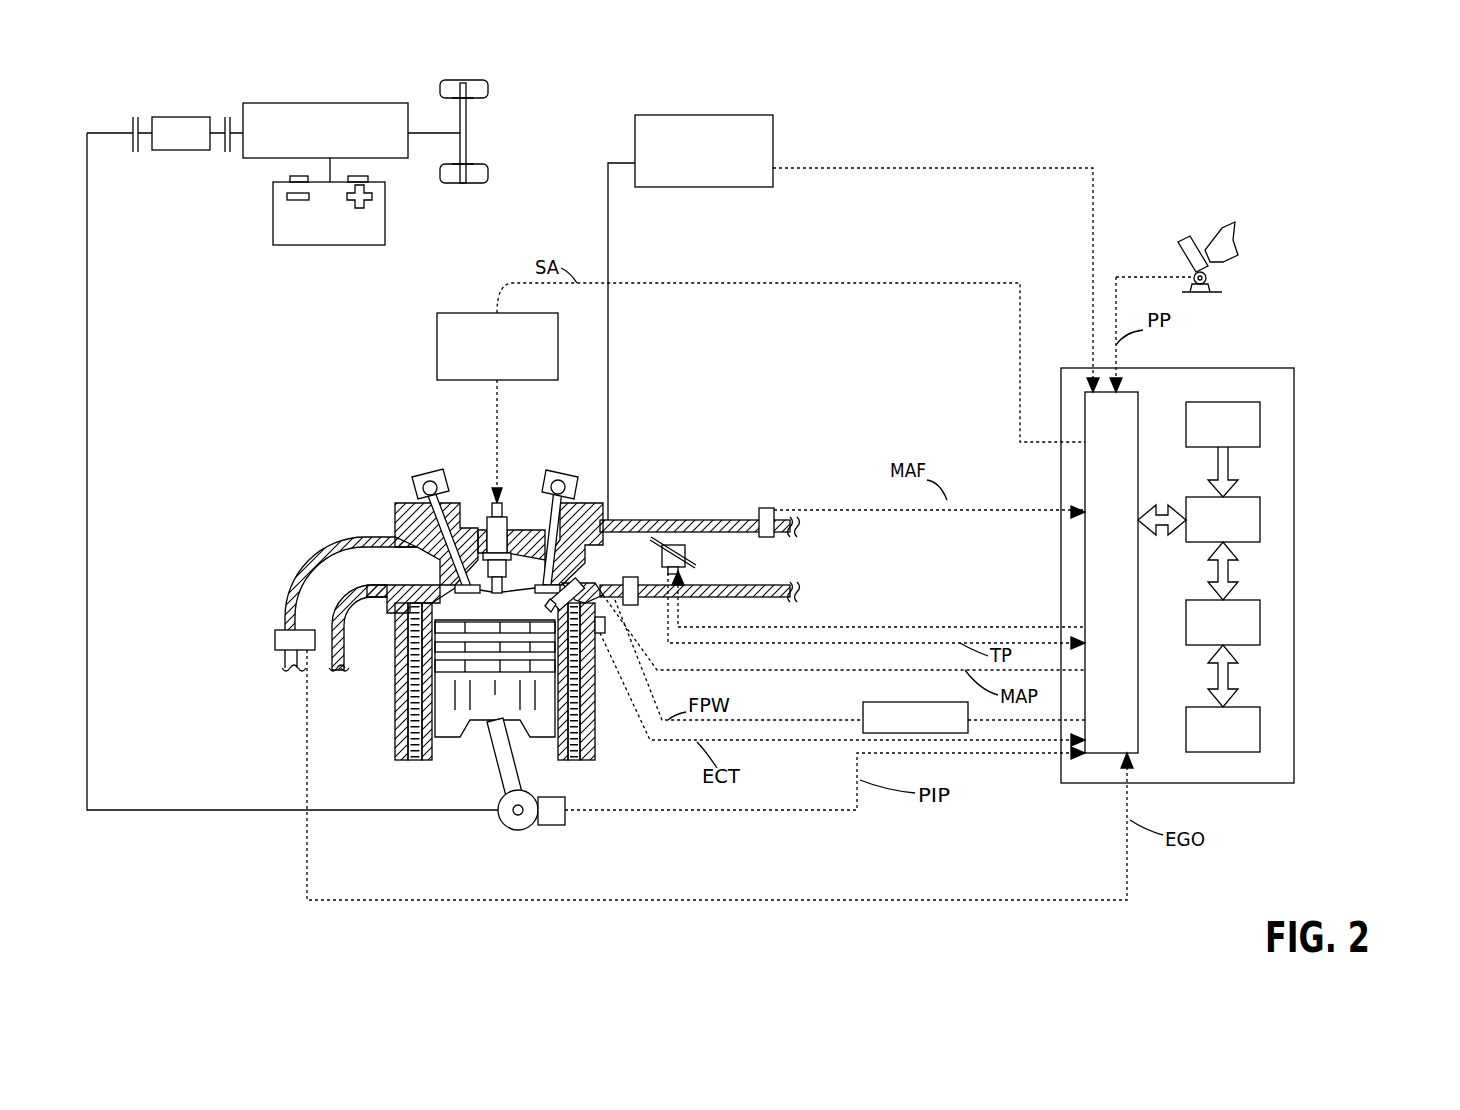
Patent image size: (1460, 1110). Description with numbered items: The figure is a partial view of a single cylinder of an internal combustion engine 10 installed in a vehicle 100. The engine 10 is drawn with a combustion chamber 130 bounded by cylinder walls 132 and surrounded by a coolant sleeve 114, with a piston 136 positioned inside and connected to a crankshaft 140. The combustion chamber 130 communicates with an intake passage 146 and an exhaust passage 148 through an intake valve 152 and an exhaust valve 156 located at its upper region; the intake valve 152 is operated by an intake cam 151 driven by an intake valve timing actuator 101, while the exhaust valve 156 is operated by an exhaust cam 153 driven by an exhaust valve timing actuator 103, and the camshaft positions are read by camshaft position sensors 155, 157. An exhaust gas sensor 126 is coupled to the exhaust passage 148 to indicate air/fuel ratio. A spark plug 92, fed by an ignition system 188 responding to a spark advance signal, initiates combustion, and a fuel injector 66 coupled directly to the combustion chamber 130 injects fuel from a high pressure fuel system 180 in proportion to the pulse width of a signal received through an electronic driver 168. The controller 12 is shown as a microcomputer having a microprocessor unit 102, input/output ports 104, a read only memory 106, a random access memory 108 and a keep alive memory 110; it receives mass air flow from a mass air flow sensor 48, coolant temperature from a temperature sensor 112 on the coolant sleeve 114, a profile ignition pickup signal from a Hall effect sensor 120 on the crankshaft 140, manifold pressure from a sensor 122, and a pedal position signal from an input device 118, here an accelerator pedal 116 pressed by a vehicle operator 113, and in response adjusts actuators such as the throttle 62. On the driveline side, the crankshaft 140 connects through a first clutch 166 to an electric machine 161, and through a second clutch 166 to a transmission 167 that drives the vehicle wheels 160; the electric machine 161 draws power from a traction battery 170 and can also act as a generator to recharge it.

The internal combustion engine 10 is at (322, 340).
The controller 12 is at (1290, 368).
The mass air flow sensor 48 is at (774, 510).
The throttle 62 is at (672, 545).
The fuel injector 66 is at (572, 590).
The spark plug 92 is at (490, 520).
The vehicle 100 is at (1382, 140).
The intake valve timing actuator 101 is at (563, 472).
The microprocessor unit 102 is at (1262, 515).
The exhaust valve timing actuator 103 is at (432, 477).
The input/output ports 104 is at (1140, 400).
The read only memory 106 is at (1262, 420).
The random access memory 108 is at (1262, 620).
The keep alive memory 110 is at (1262, 727).
The temperature sensor 112 is at (605, 635).
The vehicle operator 113 is at (1232, 240).
The coolant sleeve 114 is at (598, 660).
The accelerator pedal 116 is at (1180, 256).
The input device 118 is at (1212, 280).
The Hall effect sensor 120 is at (556, 826).
The manifold pressure sensor 122 is at (638, 598).
The exhaust gas sensor 126 is at (275, 640).
The combustion chamber 130 is at (455, 600).
The cylinder walls 132 is at (433, 748).
The piston 136 is at (485, 705).
The crankshaft 140 is at (506, 826).
The intake passage 146 is at (642, 567).
The exhaust passage 148 is at (352, 579).
The intake cam 151 is at (555, 475).
The intake valve 152 is at (538, 545).
The exhaust cam 153 is at (437, 475).
The camshaft position sensor 155 is at (575, 482).
The exhaust valve 156 is at (450, 578).
The camshaft position sensor 157 is at (412, 492).
The vehicle wheels 160 is at (470, 183).
The electric machine 161 is at (181, 151).
The clutch 166 is at (131, 120).
The transmission 167 is at (388, 158).
The electronic driver 168 is at (863, 702).
The traction battery 170 is at (330, 245).
The fuel system 180 is at (773, 128).
The ignition system 188 is at (453, 313).